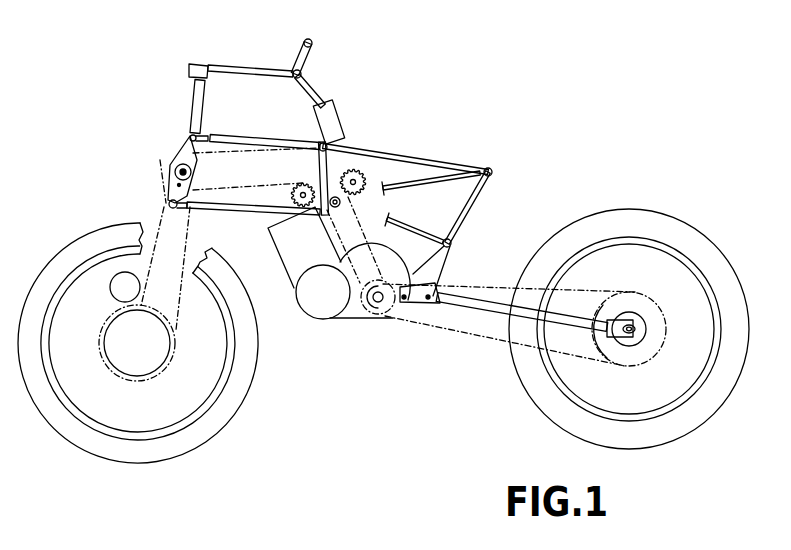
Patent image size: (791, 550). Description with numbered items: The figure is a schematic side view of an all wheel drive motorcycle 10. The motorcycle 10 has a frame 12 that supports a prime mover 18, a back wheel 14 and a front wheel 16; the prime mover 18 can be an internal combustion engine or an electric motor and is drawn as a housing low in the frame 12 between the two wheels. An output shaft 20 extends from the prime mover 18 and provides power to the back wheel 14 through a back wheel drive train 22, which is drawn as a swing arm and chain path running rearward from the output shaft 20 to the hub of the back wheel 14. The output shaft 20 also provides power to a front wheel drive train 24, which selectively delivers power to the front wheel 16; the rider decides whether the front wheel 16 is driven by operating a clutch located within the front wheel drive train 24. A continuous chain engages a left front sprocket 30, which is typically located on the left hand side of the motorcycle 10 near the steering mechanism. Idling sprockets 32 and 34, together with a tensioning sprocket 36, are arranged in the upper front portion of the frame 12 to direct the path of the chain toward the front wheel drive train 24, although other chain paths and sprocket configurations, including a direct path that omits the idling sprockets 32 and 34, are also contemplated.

The motorcycle 10 is at (455, 88).
The frame 12 is at (470, 151).
The back wheel 14 is at (665, 428).
The front wheel 16 is at (212, 425).
The prime mover 18 is at (342, 317).
The output shaft 20 is at (373, 312).
The back wheel drive train 22 is at (488, 352).
The front wheel drive train 24 is at (153, 201).
The left front sprocket 30 is at (620, 352).
The idling sprocket 32 is at (298, 210).
The idling sprocket 34 is at (333, 147).
The tensioning sprocket 36 is at (365, 168).